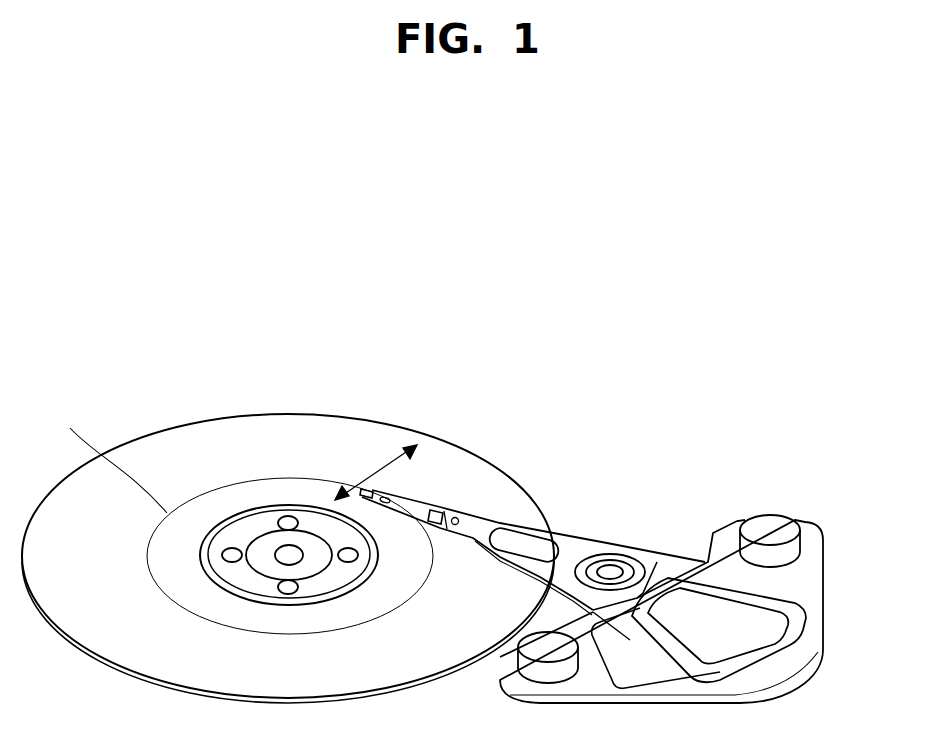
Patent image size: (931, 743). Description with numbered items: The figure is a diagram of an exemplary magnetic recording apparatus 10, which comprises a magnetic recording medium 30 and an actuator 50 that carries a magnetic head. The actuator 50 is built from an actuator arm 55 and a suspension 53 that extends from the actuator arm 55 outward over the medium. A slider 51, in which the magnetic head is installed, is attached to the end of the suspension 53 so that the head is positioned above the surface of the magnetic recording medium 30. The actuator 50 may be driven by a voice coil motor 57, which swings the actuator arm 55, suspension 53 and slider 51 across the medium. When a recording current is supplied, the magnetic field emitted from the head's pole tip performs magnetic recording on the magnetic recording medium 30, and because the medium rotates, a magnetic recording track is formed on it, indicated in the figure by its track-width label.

The magnetic recording apparatus 10 is at (665, 347).
The magnetic recording medium 30 is at (187, 423).
The actuator 50 is at (768, 460).
The slider 51 is at (368, 488).
The suspension 53 is at (417, 505).
The actuator arm 55 is at (637, 553).
The voice coil motor 57 is at (765, 648).